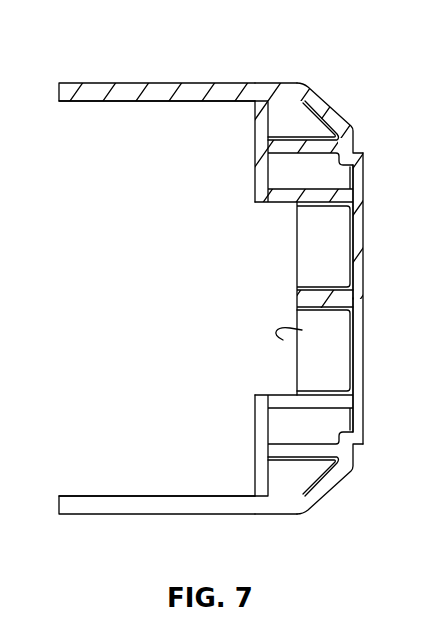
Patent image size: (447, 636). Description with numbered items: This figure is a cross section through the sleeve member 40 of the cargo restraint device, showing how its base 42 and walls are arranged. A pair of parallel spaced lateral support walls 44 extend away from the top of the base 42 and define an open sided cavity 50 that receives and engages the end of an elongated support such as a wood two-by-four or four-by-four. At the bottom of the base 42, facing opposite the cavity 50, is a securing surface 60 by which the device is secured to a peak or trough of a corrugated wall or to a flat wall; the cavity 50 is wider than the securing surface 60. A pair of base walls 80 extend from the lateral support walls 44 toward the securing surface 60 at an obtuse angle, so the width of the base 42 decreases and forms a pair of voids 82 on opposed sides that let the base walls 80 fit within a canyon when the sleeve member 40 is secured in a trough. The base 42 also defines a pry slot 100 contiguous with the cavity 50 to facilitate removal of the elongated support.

The sleeve member 40 is at (200, 92).
The base 42 is at (358, 183).
The lateral support walls 44 is at (92, 92).
The cavity 50 is at (150, 103).
The securing surface 60 is at (358, 262).
The base walls 80 is at (318, 97).
The voids 82 is at (333, 123).
The pry slot 100 is at (283, 340).